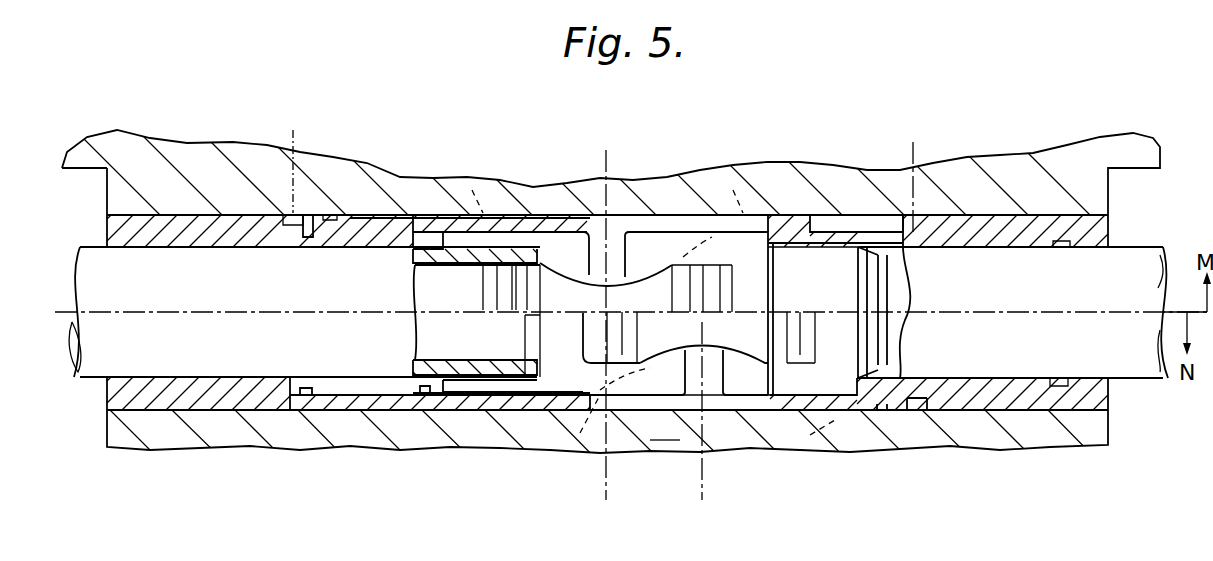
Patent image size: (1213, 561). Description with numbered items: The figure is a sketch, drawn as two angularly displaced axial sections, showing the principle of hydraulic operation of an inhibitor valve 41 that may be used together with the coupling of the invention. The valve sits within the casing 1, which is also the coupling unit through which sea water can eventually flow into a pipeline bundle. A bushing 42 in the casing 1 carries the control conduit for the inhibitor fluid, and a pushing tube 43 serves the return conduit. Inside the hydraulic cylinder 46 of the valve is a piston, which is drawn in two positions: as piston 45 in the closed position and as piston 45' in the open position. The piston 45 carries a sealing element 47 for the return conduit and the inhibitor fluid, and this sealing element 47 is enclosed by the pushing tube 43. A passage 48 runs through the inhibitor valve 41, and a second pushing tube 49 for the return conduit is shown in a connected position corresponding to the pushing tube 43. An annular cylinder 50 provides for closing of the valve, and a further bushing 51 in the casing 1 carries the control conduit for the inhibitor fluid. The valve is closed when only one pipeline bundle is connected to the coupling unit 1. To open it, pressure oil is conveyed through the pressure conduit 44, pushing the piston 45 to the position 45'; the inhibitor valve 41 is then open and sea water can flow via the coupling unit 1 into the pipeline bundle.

The casing 1 is at (668, 436).
The inhibitor valve 41 is at (768, 138).
The bushing 42 is at (177, 400).
The pushing tube 43 is at (245, 362).
The pressure conduit 44 is at (290, 135).
The piston 45 is at (348, 161).
The piston 45' is at (500, 446).
The hydraulic cylinder 46 is at (364, 400).
The sealing element 47 is at (597, 356).
The passage 48 is at (700, 388).
The pushing tube 49 is at (950, 262).
The annular cylinder 50 is at (920, 411).
The bushing 51 is at (793, 388).